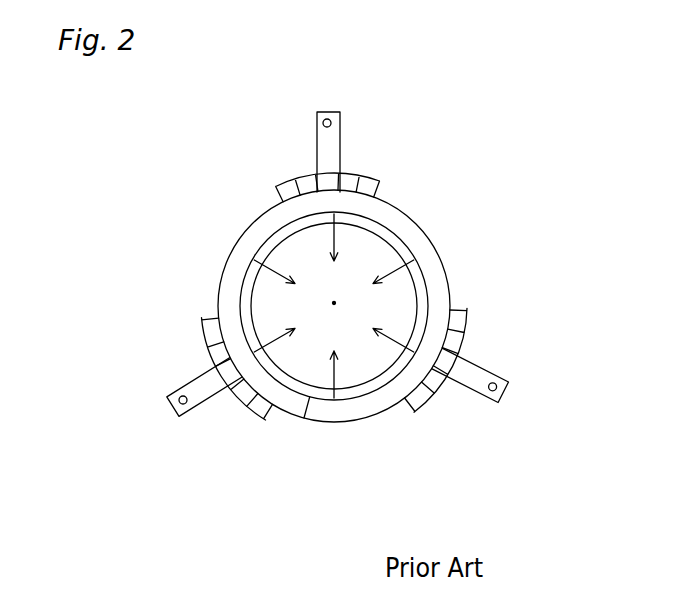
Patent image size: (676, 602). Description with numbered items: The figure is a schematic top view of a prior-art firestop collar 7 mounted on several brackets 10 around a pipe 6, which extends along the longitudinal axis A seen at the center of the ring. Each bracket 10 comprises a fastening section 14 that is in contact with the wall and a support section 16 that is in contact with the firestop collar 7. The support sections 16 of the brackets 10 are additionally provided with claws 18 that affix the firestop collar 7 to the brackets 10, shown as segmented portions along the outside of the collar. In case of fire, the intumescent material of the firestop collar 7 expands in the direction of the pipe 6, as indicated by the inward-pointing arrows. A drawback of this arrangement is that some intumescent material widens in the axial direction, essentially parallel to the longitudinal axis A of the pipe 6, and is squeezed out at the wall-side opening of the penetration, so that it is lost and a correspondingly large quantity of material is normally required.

The firestop collar 7 is at (266, 230).
The pipe 6 is at (245, 278).
The longitudinal axis A is at (334, 303).
The claws 18 is at (380, 187).
The bracket 10 is at (359, 136).
The fastening section 14 is at (328, 112).
The support section 16 is at (283, 180).